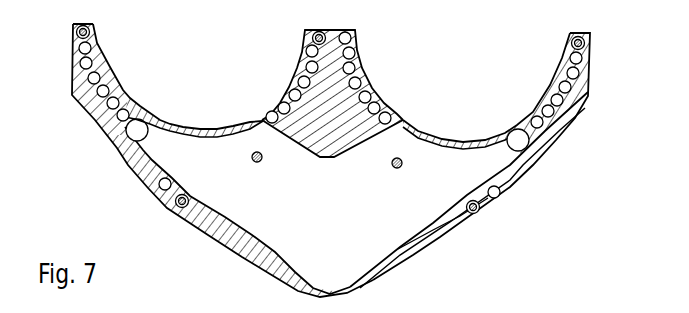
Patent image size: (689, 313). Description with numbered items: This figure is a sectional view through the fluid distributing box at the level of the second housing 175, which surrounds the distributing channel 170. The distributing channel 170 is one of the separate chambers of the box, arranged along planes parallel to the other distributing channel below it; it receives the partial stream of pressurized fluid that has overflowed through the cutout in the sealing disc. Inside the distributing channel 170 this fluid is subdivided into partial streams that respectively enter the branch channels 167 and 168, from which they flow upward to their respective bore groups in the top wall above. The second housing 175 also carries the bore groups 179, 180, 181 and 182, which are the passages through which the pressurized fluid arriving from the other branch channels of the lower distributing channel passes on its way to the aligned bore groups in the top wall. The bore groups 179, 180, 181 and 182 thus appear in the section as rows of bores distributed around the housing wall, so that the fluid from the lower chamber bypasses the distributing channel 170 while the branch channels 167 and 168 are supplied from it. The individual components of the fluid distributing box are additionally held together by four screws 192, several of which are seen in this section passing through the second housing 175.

The branch channel 167 is at (218, 150).
The branch channel 168 is at (442, 155).
The distributing channel 170 is at (385, 240).
The second housing 175 is at (237, 254).
The bore group 179 is at (118, 117).
The bore group 180 is at (273, 105).
The bore group 181 is at (391, 115).
The bore group 182 is at (534, 117).
The screw 192 is at (175, 206).